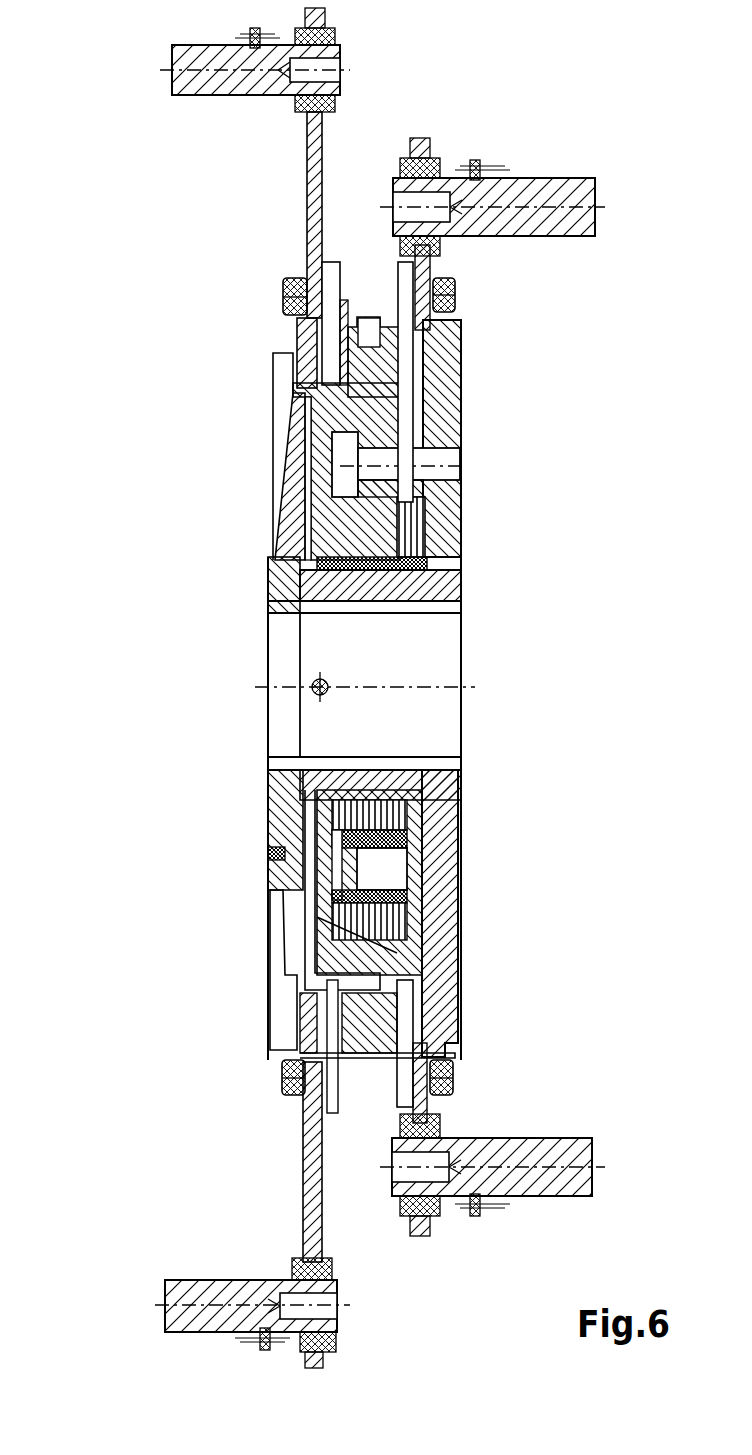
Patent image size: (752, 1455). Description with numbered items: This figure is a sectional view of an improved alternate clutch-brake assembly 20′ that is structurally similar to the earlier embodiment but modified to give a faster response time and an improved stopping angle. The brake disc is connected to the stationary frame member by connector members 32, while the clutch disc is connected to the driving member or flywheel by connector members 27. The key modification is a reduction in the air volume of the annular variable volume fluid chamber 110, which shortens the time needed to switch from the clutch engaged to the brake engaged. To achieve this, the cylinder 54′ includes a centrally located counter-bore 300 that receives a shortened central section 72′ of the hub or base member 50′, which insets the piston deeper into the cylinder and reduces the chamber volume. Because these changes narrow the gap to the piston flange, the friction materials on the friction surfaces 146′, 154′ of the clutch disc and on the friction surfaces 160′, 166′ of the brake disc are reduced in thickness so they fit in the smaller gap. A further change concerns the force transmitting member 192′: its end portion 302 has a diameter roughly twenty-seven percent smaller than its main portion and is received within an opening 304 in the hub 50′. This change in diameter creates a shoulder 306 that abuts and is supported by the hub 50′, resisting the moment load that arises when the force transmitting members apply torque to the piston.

The clutch-brake assembly 20′ is at (146, 671).
The connector members 27 is at (540, 178).
The connector members 32 is at (200, 45).
The hub or base member 50′ is at (461, 375).
The cylinder 54′ is at (268, 590).
The shortened central section 72′ is at (300, 558).
The annular variable volume fluid chamber 110 is at (310, 462).
The friction surface 146′ is at (388, 292).
The friction surface 154′ is at (455, 328).
The friction surface 160′ is at (283, 300).
The friction surface 166′ is at (335, 300).
The force transmitting member 192′ is at (461, 430).
The counter-bore 300 is at (300, 752).
The end portion 302 is at (461, 505).
The opening 304 is at (461, 445).
The shoulder 306 is at (461, 560).